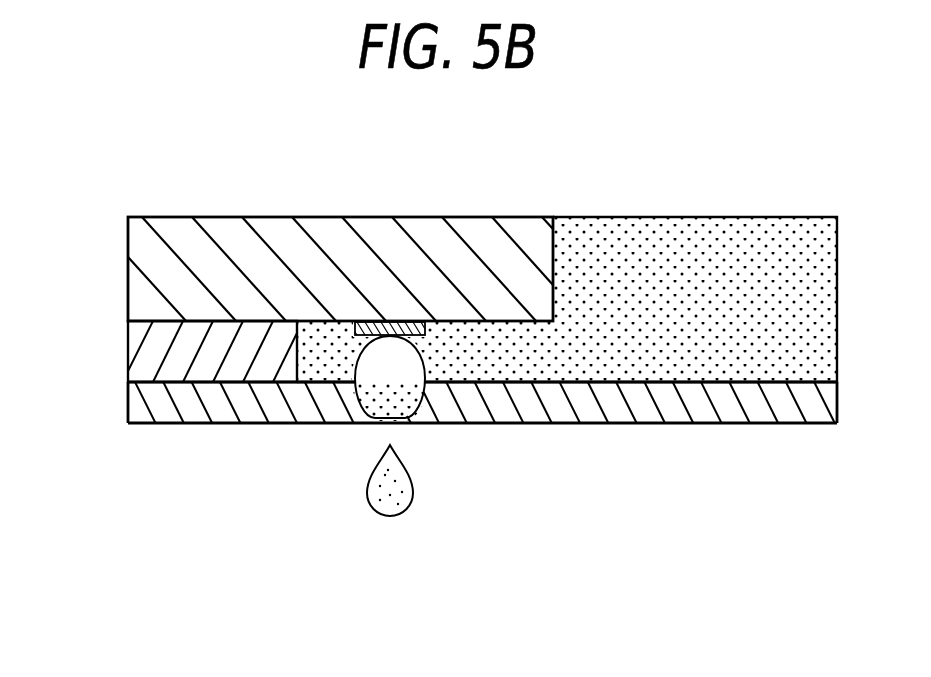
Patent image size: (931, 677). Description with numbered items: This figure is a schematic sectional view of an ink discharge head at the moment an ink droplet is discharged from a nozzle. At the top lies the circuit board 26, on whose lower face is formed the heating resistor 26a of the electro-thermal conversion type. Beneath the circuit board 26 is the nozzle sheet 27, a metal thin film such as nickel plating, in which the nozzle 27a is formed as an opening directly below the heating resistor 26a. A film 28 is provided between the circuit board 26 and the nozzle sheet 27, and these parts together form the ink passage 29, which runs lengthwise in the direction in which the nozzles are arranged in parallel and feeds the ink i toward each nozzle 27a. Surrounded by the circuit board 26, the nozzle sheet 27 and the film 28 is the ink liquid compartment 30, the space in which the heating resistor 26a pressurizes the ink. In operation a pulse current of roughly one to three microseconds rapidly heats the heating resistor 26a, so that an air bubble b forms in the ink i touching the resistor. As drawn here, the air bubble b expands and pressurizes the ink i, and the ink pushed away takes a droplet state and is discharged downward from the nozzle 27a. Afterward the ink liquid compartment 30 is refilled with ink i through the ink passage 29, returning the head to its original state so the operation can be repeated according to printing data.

The circuit board 26 is at (296, 252).
The heating resistor 26a is at (392, 335).
The nozzle sheet 27 is at (150, 408).
The nozzle 27a is at (372, 424).
The film 28 is at (153, 351).
The ink passage 29 is at (683, 250).
The ink liquid compartment 30 is at (498, 353).
The air bubble b is at (408, 385).
The ink i is at (390, 510).